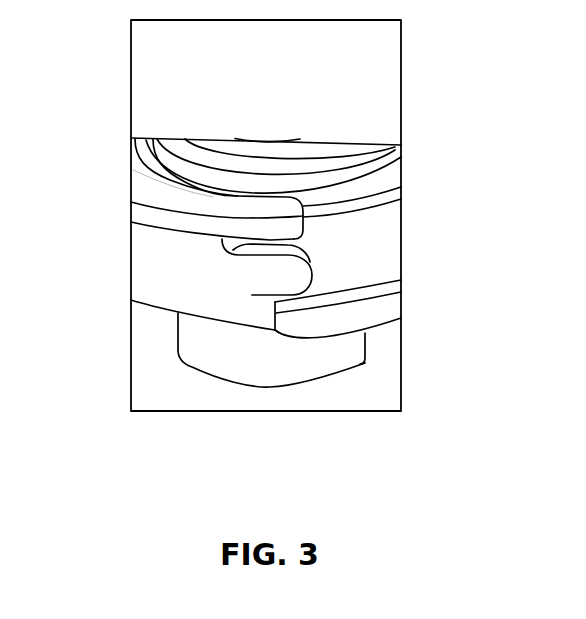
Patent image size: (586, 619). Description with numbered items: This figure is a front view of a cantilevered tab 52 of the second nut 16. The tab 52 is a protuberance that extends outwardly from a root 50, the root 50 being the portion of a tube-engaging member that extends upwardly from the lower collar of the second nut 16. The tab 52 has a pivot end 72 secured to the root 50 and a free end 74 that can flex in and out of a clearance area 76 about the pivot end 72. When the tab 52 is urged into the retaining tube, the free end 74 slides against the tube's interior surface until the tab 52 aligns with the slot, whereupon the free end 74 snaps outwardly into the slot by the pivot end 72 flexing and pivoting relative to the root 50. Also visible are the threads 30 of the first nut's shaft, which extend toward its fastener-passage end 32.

The threads 30 is at (197, 152).
The second nut 16 is at (146, 283).
The root 50 is at (173, 288).
The cantilevered tab 52 is at (296, 280).
The clearance area 76 is at (340, 265).
The free end 74 is at (307, 252).
The fastener-passage end 32 is at (337, 365).
The pivot end 72 is at (222, 270).